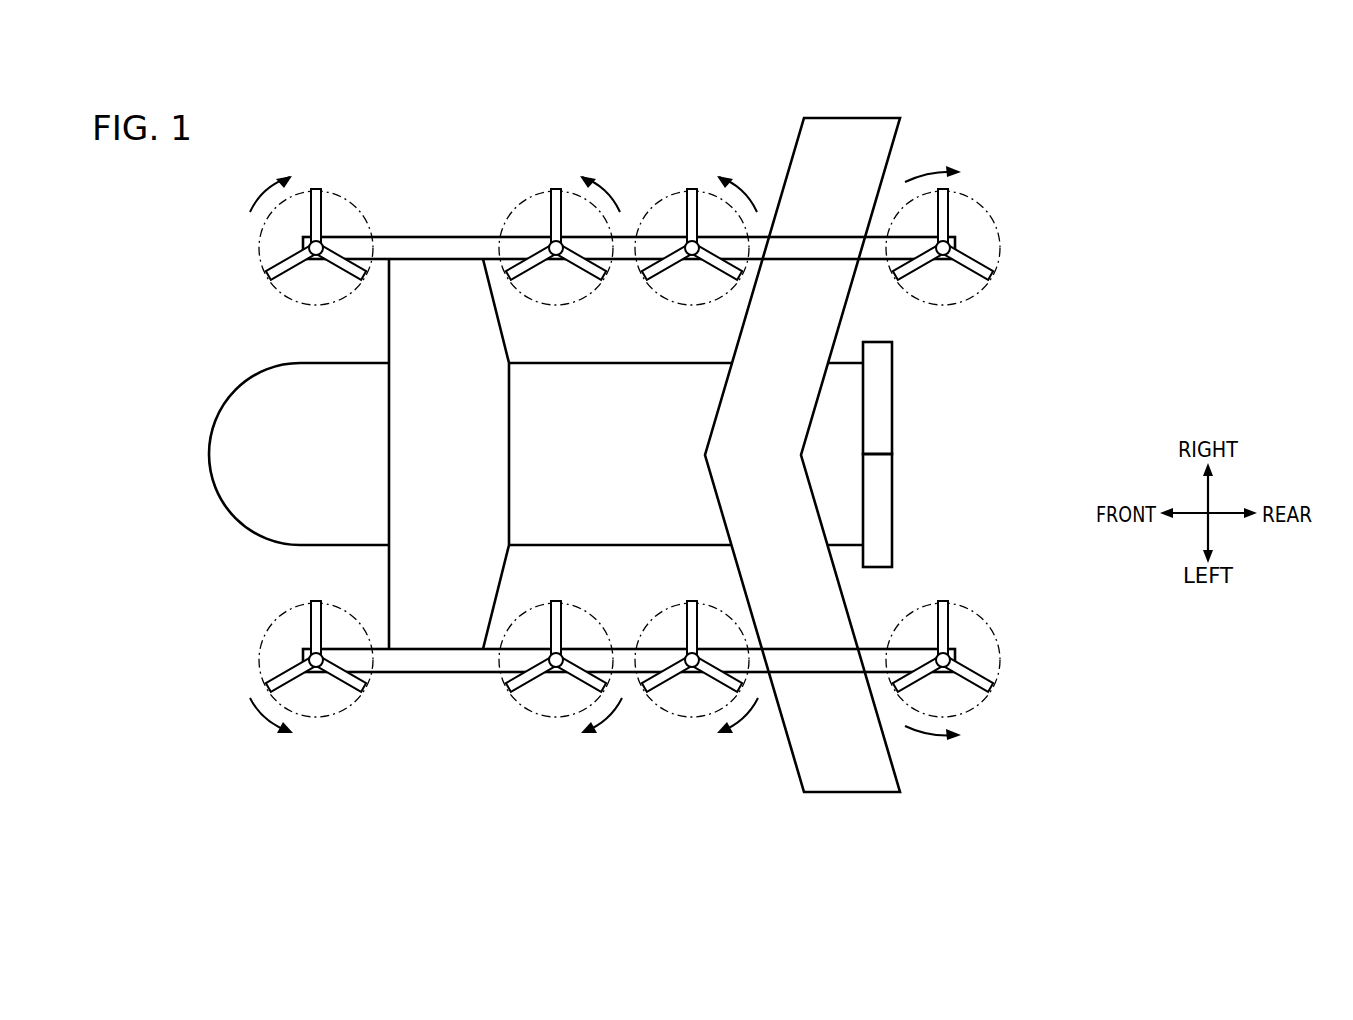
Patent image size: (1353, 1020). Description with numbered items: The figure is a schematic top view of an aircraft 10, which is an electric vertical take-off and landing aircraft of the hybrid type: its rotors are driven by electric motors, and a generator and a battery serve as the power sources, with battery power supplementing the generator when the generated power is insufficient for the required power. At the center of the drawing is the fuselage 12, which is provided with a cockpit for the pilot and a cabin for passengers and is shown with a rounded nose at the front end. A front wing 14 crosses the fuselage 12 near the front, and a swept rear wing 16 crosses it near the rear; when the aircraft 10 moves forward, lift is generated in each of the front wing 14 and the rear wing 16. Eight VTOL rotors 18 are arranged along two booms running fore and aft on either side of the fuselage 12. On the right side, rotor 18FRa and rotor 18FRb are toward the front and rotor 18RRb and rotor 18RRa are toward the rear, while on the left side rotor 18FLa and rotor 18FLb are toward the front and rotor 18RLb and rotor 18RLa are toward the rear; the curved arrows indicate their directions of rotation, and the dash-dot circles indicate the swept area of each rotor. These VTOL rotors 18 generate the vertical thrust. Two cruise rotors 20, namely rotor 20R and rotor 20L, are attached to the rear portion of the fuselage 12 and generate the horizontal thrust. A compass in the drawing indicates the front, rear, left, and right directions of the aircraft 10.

The aircraft 10 is at (134, 210).
The fuselage 12 is at (216, 417).
The front wing 14 is at (422, 282).
The rear wing 16 is at (843, 117).
The VTOL rotors 18 is at (690, 454).
The rotor 18FRa is at (316, 190).
The rotor 18FRb is at (553, 190).
The rotor 18RRa is at (948, 204).
The rotor 18RRb is at (694, 192).
The rotor 18FLa is at (345, 683).
The rotor 18FLb is at (510, 685).
The rotor 18RLa is at (985, 688).
The rotor 18RLb is at (662, 685).
The cruise rotors 20 is at (942, 454).
The rotor 20R is at (893, 403).
The rotor 20L is at (893, 506).